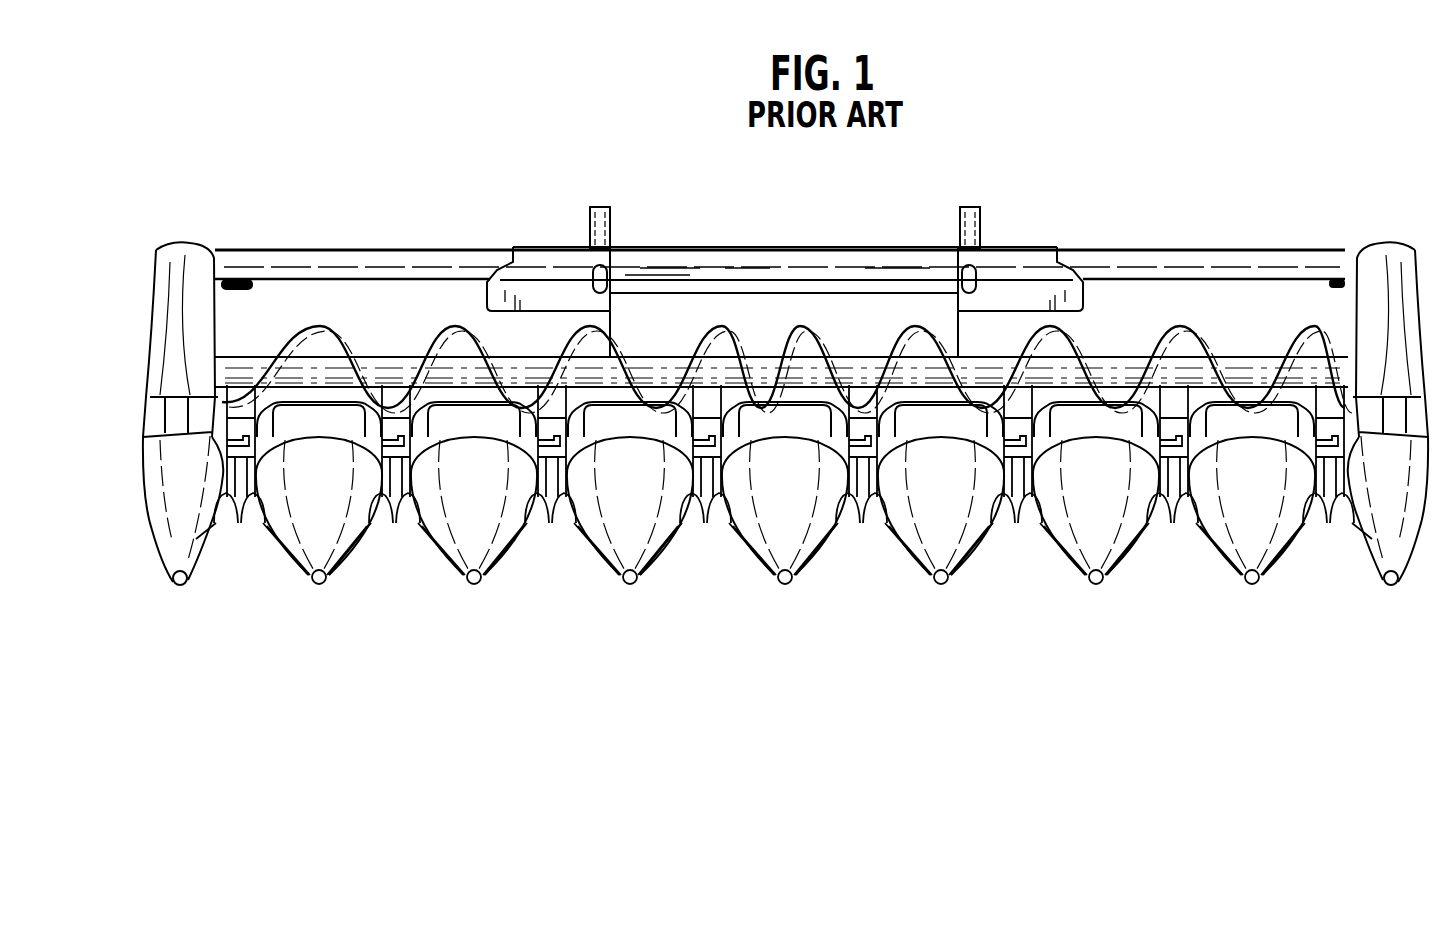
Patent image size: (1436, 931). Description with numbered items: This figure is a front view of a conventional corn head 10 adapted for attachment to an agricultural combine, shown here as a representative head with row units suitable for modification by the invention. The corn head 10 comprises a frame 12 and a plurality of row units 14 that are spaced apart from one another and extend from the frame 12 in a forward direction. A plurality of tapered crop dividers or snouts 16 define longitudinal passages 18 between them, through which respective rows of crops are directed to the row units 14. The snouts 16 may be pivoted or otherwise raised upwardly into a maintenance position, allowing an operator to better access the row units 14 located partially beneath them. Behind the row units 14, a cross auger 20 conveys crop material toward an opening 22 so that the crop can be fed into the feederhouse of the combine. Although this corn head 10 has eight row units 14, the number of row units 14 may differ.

The corn head 10 is at (258, 84).
The frame 12 is at (262, 238).
The row units 14 is at (217, 562).
The tapered crop dividers or snouts 16 is at (635, 511).
The longitudinal passages 18 is at (256, 580).
The cross auger 20 is at (404, 342).
The opening 22 is at (762, 320).